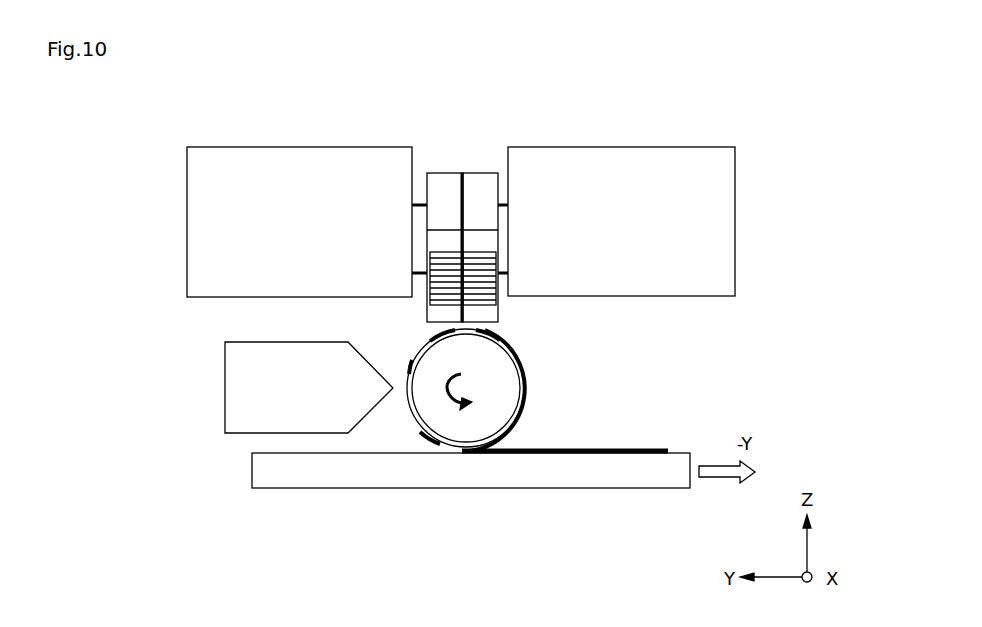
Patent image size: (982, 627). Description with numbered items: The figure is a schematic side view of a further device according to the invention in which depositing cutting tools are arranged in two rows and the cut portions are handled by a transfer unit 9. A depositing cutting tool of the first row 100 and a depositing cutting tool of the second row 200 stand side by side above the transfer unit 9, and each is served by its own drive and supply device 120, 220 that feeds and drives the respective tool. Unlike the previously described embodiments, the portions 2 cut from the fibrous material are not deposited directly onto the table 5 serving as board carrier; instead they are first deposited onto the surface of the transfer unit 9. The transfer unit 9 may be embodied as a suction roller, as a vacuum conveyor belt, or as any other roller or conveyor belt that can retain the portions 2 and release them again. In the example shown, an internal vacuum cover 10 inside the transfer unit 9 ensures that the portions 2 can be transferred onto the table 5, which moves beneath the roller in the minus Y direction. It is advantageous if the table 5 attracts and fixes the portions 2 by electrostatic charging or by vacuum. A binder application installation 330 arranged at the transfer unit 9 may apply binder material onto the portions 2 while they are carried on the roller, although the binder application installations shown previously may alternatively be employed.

The drive and supply device 120 is at (277, 147).
The drive and supply device 220 is at (600, 147).
The depositing cutting tool of the first row 100 is at (441, 150).
The depositing cutting tool of the second row 200 is at (484, 150).
The portion 2 is at (500, 302).
The transfer unit 9 is at (520, 358).
The vacuum cover 10 is at (525, 403).
The binder application installation 330 is at (225, 363).
The placing table 5 is at (537, 488).